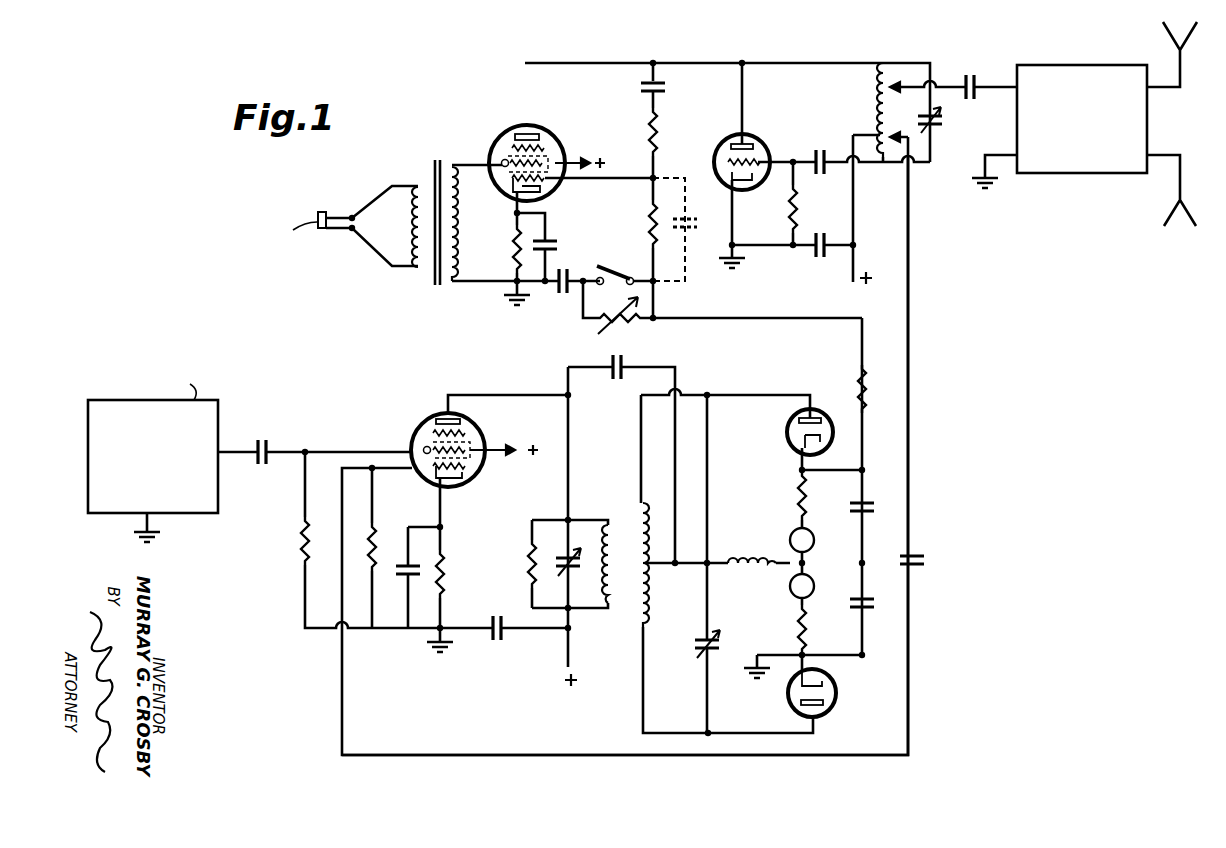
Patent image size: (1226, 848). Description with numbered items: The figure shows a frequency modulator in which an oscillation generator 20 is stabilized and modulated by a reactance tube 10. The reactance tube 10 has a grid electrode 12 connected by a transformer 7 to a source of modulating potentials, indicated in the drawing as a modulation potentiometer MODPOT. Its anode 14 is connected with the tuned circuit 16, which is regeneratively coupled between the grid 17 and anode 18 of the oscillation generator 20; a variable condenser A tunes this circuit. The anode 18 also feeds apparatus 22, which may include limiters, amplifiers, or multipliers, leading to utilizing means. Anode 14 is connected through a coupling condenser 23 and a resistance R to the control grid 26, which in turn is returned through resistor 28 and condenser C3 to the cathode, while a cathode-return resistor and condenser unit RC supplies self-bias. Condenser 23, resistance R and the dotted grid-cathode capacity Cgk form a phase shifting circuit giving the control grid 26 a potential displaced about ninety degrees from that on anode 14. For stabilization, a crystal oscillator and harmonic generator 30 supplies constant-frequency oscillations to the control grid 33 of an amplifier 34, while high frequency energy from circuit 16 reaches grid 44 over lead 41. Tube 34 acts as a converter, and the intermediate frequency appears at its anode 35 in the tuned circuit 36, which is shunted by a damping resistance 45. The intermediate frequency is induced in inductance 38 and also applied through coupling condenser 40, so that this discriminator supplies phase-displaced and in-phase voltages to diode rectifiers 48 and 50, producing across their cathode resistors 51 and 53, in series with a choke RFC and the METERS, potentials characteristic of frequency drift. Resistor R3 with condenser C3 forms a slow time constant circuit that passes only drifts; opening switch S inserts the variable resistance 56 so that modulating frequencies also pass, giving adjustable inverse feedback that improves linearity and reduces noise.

The transformer 7 is at (432, 176).
The reactance tube 10 is at (505, 130).
The grid electrode 12 is at (509, 161).
The anode 14 is at (540, 134).
The tuned circuit 16 is at (898, 110).
The grid 17 is at (725, 161).
The anode 18 is at (736, 146).
The oscillation generator 20 is at (758, 142).
The apparatus 22 is at (1080, 65).
The coupling condenser 23 is at (665, 91).
The control grid electrode 26 is at (545, 184).
The resistor 28 is at (649, 226).
The crystal oscillator and frequency multipliers 30 is at (219, 412).
The control grid of mixer tube 33 is at (430, 448).
The amplifier 34 is at (438, 418).
The anode 35 is at (470, 425).
The tuned circuit 36 is at (586, 594).
The inductance 38 is at (640, 504).
The coupling condenser 40 is at (612, 362).
The lead 41 is at (926, 418).
The grid 44 is at (466, 468).
The damping resistance 45 is at (528, 564).
The diode rectifier 48 is at (818, 412).
The diode rectifier 50 is at (838, 694).
The cathode resistor 51 is at (798, 494).
The cathode resistor 53 is at (798, 633).
The variable resistance 56 is at (633, 322).
The resistance R is at (664, 132).
The cathode-return resistor and condenser unit RC is at (515, 234).
The condenser C3 is at (568, 292).
The switch S is at (615, 272).
The grid-cathode capacity Cgk is at (704, 235).
The tuning condenser A is at (932, 113).
The resistor R3 is at (877, 389).
The radio frequency choke RFC is at (750, 580).
The meters METERS is at (792, 582).
The modulation potentiometer MODPOT is at (280, 236).